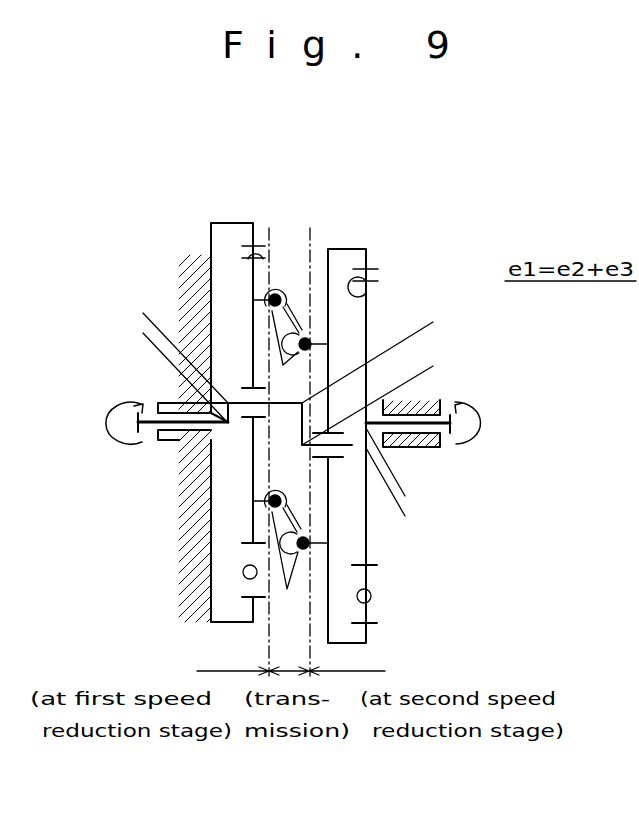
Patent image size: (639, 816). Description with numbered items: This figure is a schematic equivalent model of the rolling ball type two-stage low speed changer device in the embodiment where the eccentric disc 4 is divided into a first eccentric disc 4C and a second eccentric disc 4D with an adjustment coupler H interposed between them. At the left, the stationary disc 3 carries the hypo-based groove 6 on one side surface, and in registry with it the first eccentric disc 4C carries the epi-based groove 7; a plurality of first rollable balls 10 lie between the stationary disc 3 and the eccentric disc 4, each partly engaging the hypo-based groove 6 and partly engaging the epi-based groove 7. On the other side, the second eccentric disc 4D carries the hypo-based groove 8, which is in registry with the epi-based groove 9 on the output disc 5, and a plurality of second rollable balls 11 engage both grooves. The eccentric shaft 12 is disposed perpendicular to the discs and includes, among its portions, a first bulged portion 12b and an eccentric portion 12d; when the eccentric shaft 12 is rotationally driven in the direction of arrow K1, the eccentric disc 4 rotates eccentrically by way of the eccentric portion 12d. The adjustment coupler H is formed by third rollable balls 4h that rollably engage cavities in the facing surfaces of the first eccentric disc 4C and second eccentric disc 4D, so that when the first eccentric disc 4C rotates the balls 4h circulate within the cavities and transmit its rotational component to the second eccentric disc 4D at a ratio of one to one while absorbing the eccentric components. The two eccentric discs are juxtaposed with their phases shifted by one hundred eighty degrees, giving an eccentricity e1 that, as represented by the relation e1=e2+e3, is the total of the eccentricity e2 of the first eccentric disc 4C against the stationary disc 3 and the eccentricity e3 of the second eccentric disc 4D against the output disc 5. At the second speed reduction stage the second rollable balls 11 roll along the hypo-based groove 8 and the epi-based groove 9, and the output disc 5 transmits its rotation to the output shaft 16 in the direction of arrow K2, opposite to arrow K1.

The stationary disc 3 is at (208, 306).
The eccentric disc 4 is at (317, 284).
The first eccentric disc 4C is at (253, 322).
The second eccentric disc 4D is at (333, 357).
The third rollable balls 4h is at (290, 456).
The output disc 5 is at (368, 318).
The hypo-based groove 6 is at (247, 256).
The epi-based groove 7 is at (261, 263).
The hypo-based groove 8 is at (379, 270).
The epi-based groove 9 is at (368, 290).
The first rollable balls 10 is at (244, 578).
The second rollable balls 11 is at (372, 596).
The eccentric shaft 12 is at (154, 447).
The first bulged portion 12b is at (170, 437).
The eccentric portion 12d is at (292, 403).
The output shaft 16 is at (428, 438).
The adjustment coupler H is at (287, 250).
The arrow K1 is at (110, 423).
The arrow K2 is at (487, 423).
The eccentricity e1 is at (433, 303).
The eccentricity e2 is at (143, 296).
The eccentricity e3 is at (402, 468).